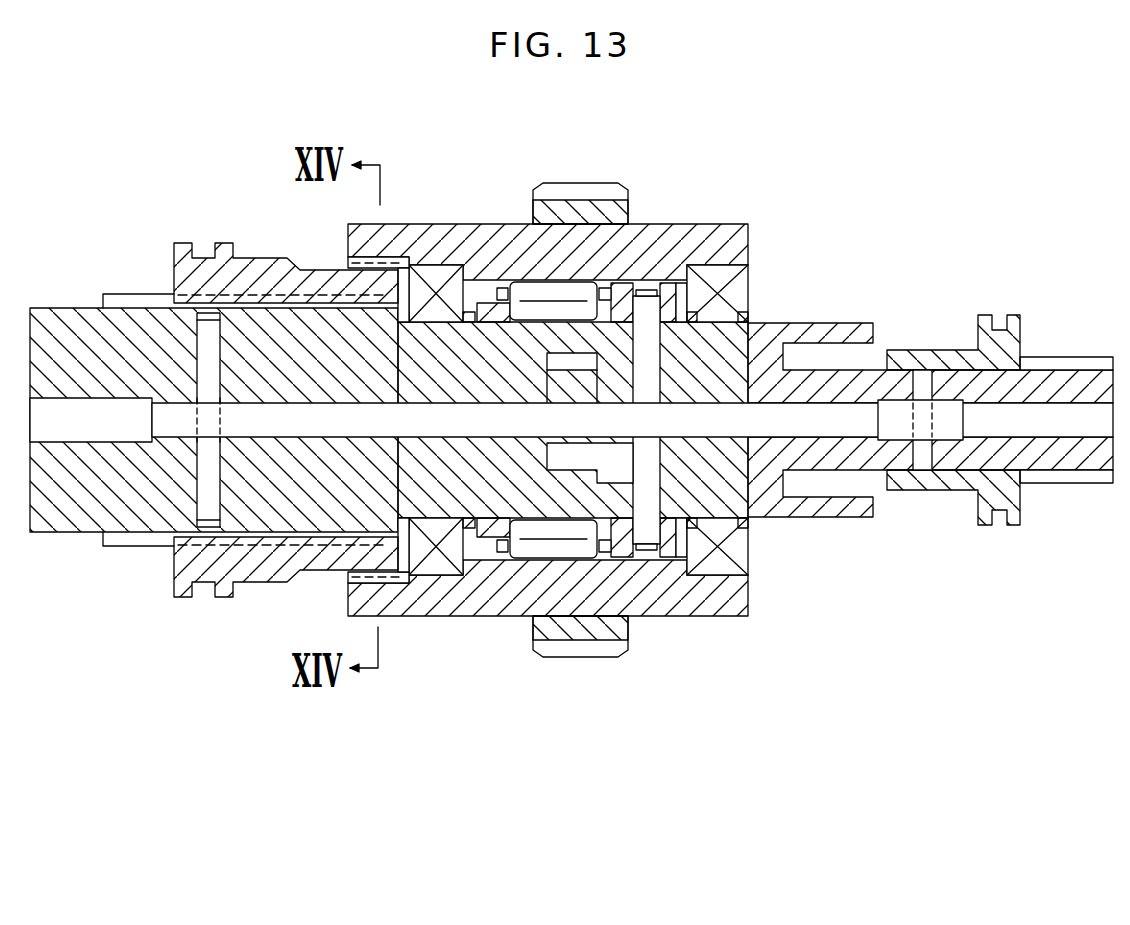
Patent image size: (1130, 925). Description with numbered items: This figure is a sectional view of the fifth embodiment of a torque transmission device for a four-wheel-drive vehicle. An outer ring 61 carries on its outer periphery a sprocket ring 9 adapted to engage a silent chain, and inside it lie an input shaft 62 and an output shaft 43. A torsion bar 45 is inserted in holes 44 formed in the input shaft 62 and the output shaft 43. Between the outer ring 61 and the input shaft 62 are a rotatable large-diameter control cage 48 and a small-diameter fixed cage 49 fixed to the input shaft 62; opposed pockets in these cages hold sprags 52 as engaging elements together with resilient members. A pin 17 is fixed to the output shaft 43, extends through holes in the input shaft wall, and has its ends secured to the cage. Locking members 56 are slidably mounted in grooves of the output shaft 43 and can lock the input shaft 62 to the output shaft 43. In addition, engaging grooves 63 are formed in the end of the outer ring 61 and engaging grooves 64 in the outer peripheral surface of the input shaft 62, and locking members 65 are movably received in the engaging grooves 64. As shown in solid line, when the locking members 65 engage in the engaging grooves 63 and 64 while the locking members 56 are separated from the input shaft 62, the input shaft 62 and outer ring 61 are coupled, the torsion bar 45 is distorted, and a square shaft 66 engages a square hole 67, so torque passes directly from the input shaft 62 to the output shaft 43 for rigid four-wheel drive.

The sprocket ring 9 is at (596, 196).
The pin 17 is at (648, 530).
The output shaft 43 is at (768, 366).
The holes 44 is at (450, 423).
The torsion bar 45 is at (523, 423).
The control cage 48 is at (710, 292).
The fixed cage 49 is at (493, 283).
The sprag 52 is at (585, 290).
The locking members 56 is at (921, 356).
The outer ring 61 is at (462, 266).
The input shaft 62 is at (72, 333).
The engaging grooves 63 is at (399, 262).
The engaging grooves 64 is at (148, 303).
The locking members 65 is at (267, 258).
The square shaft 66 is at (567, 385).
The square hole 67 is at (580, 456).